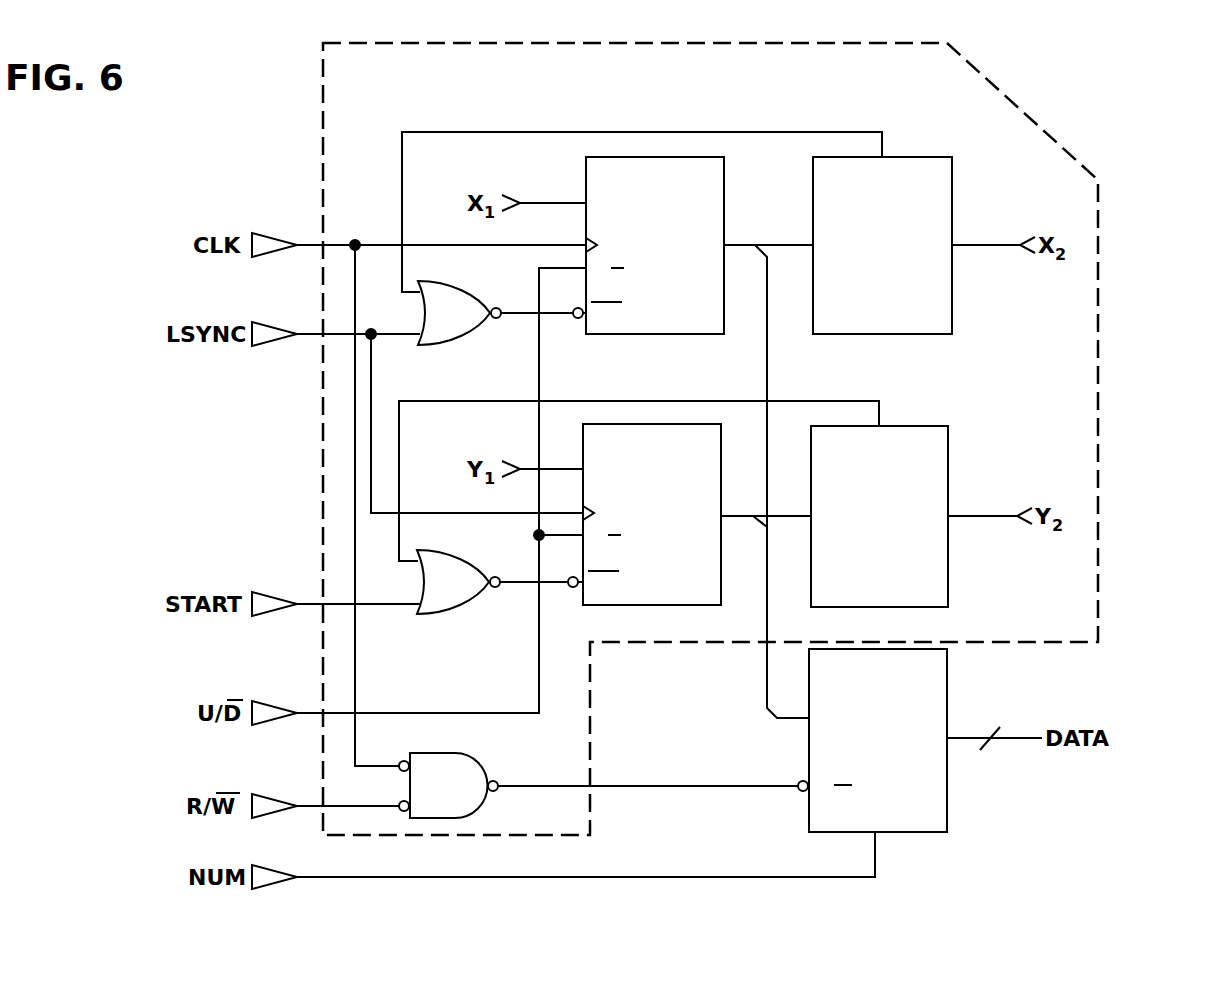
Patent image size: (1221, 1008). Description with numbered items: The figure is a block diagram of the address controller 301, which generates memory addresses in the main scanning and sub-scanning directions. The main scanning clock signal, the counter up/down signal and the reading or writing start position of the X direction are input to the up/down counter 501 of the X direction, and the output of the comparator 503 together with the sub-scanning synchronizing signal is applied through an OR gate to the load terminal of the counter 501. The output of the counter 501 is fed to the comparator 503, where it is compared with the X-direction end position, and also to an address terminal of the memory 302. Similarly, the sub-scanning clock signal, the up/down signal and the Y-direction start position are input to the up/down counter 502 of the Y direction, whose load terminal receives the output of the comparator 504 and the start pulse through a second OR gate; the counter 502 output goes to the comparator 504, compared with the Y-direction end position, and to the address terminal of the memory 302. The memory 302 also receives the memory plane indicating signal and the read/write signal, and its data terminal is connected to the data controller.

The address controller 301 is at (1110, 297).
The memory 302 is at (948, 681).
The up/down counter 501 is at (681, 157).
The up/down counter 502 is at (650, 424).
The comparator 503 is at (913, 157).
The comparator 504 is at (930, 426).